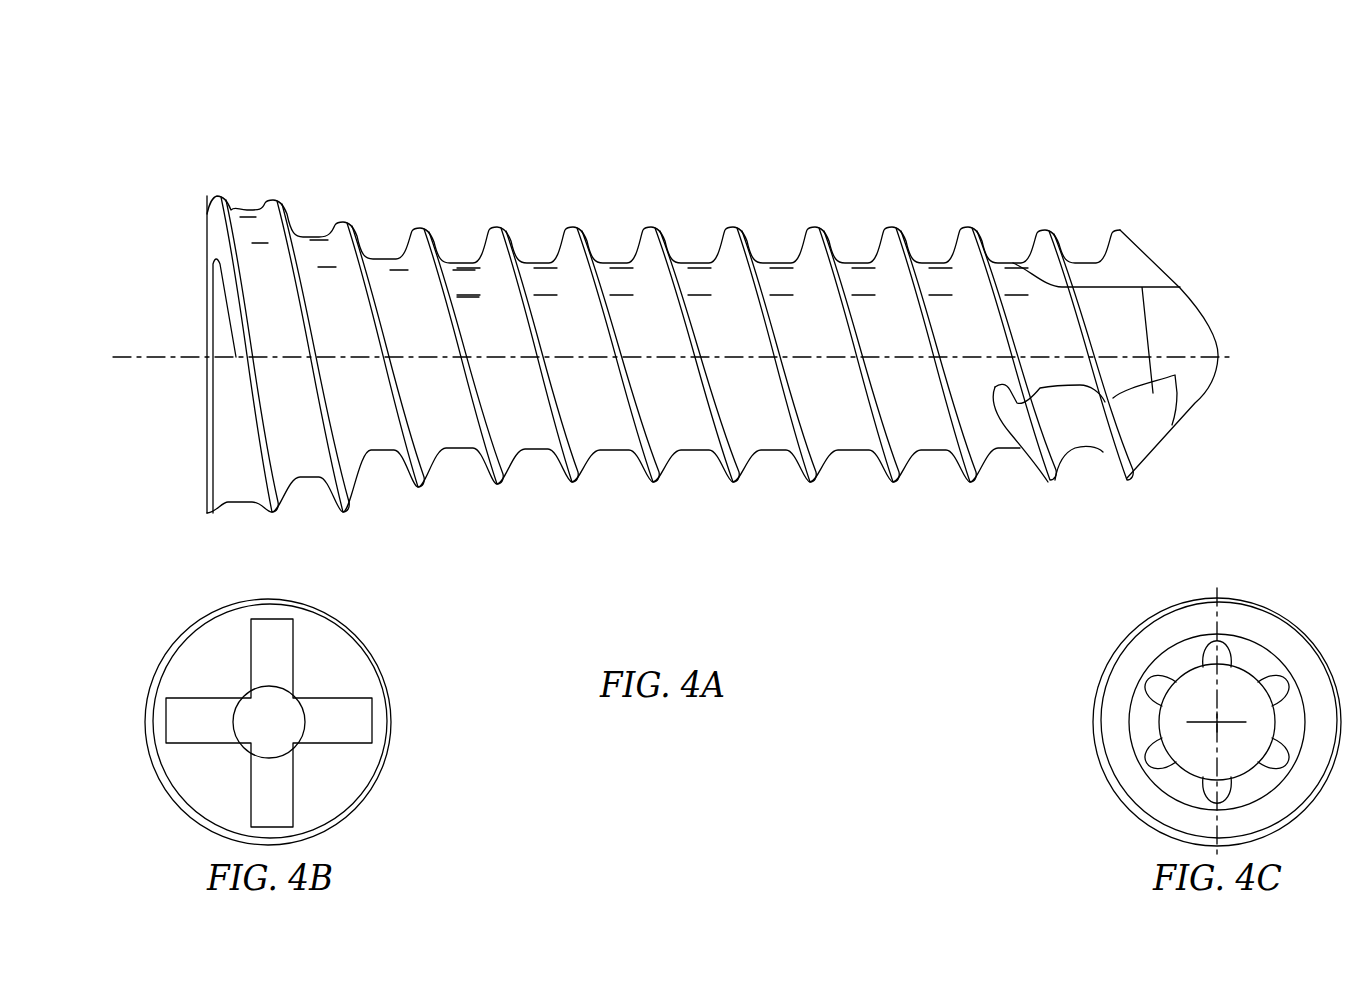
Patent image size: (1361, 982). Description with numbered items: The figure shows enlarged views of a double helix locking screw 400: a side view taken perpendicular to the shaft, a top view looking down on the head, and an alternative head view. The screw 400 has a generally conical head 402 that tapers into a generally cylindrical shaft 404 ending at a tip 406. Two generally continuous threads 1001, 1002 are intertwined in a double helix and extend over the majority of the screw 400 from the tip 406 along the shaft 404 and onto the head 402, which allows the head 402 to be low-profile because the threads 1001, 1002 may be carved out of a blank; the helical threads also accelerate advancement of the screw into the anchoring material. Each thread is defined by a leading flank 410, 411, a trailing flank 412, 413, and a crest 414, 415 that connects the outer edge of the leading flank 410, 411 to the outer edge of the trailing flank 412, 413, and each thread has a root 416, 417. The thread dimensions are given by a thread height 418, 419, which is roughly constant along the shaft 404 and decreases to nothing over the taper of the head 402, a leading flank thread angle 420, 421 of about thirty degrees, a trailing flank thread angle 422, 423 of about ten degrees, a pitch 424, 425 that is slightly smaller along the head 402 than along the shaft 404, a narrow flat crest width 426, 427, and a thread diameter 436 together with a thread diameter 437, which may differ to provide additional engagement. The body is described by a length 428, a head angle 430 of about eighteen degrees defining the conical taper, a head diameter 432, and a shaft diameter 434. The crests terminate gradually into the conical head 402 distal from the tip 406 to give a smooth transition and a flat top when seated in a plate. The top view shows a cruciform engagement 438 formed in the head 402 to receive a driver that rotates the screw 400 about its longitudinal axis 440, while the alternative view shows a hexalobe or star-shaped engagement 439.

In FIG. 4A, the double helix locking screw 400 is at (1022, 66).
In FIG. 4A, the head 402 is at (412, 150).
In FIG. 4A, the shaft 404 is at (420, 147).
In FIG. 4A, the tip 406 is at (1195, 410).
In FIG. 4A, the leading flank 410 is at (500, 488).
In FIG. 4A, the leading flank 411 is at (576, 488).
In FIG. 4A, the trailing flank 412 is at (410, 237).
In FIG. 4A, the trailing flank 413 is at (488, 240).
In FIG. 4A, the crest 414 is at (487, 484).
In FIG. 4A, the crest 415 is at (421, 486).
In FIG. 4A, the root 416 is at (618, 452).
In FIG. 4A, the root 417 is at (690, 458).
In FIG. 4A, the thread height 418 is at (541, 260).
In FIG. 4A, the thread height 419 is at (623, 260).
In FIG. 4A, the leading flank thread angle 420 is at (997, 450).
In FIG. 4A, the leading flank thread angle 421 is at (760, 450).
In FIG. 4A, the trailing flank thread angle 422 is at (631, 450).
In FIG. 4A, the trailing flank thread angle 423 is at (858, 450).
In FIG. 4A, the pitch 424 is at (892, 178).
In FIG. 4A, the pitch 425 is at (815, 222).
In FIG. 4A, the crest width 426 is at (658, 192).
In FIG. 4A, the crest width 427 is at (650, 192).
In FIG. 4A, the length 428 is at (1219, 480).
In FIG. 4A, the head angle 430 is at (410, 265).
In FIG. 4A, the head diameter 432 is at (215, 513).
In FIG. 4A, the shaft diameter 434 is at (1180, 264).
In FIG. 4A, the thread diameter 436 is at (1077, 480).
In FIG. 4A, the thread diameter 437 is at (1050, 228).
In FIG. 4B, the engagement 438 is at (362, 724).
In FIG. 4C, the engagement 439 is at (1153, 688).
In FIG. 4A, the longitudinal axis 440 is at (146, 362).
In FIG. 4A, the thread 1001 is at (843, 246).
In FIG. 4A, the thread 1002 is at (485, 240).